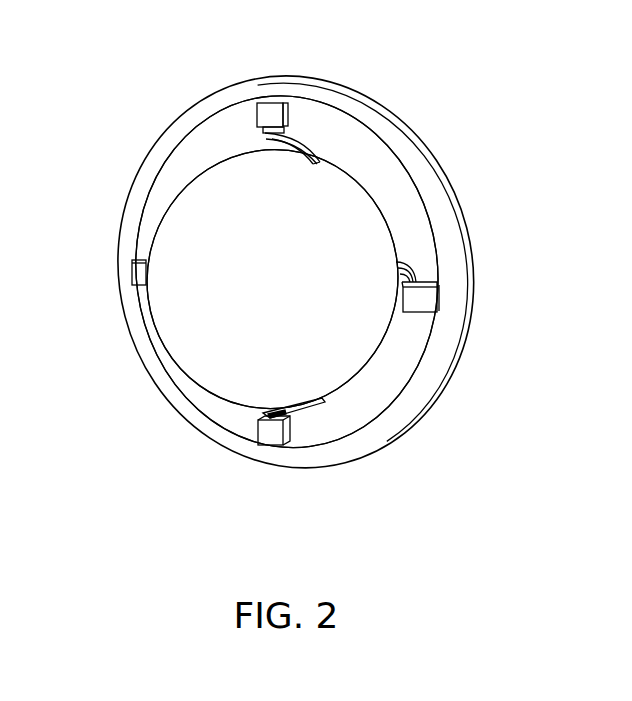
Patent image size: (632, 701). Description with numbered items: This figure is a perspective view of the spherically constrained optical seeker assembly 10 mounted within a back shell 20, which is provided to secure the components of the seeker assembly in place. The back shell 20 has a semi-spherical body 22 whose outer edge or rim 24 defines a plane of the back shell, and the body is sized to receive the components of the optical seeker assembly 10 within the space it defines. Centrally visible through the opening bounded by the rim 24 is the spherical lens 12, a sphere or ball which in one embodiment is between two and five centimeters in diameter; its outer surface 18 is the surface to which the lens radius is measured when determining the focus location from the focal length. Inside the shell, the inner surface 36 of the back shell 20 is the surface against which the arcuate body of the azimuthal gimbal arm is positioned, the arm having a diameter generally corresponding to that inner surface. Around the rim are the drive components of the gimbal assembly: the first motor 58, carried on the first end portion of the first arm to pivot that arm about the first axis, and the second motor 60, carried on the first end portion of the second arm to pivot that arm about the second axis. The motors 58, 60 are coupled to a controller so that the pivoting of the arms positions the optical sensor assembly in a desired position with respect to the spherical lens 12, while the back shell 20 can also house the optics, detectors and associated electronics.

The optical seeker assembly 10 is at (184, 428).
The spherical lens 12 is at (168, 312).
The outer surface 18 is at (305, 237).
The back shell 20 is at (435, 407).
The semi-spherical body 22 is at (190, 157).
The outer edge 24 is at (442, 237).
The inner surface 36 is at (334, 402).
The first motor 58 is at (270, 113).
The second motor 60 is at (137, 273).